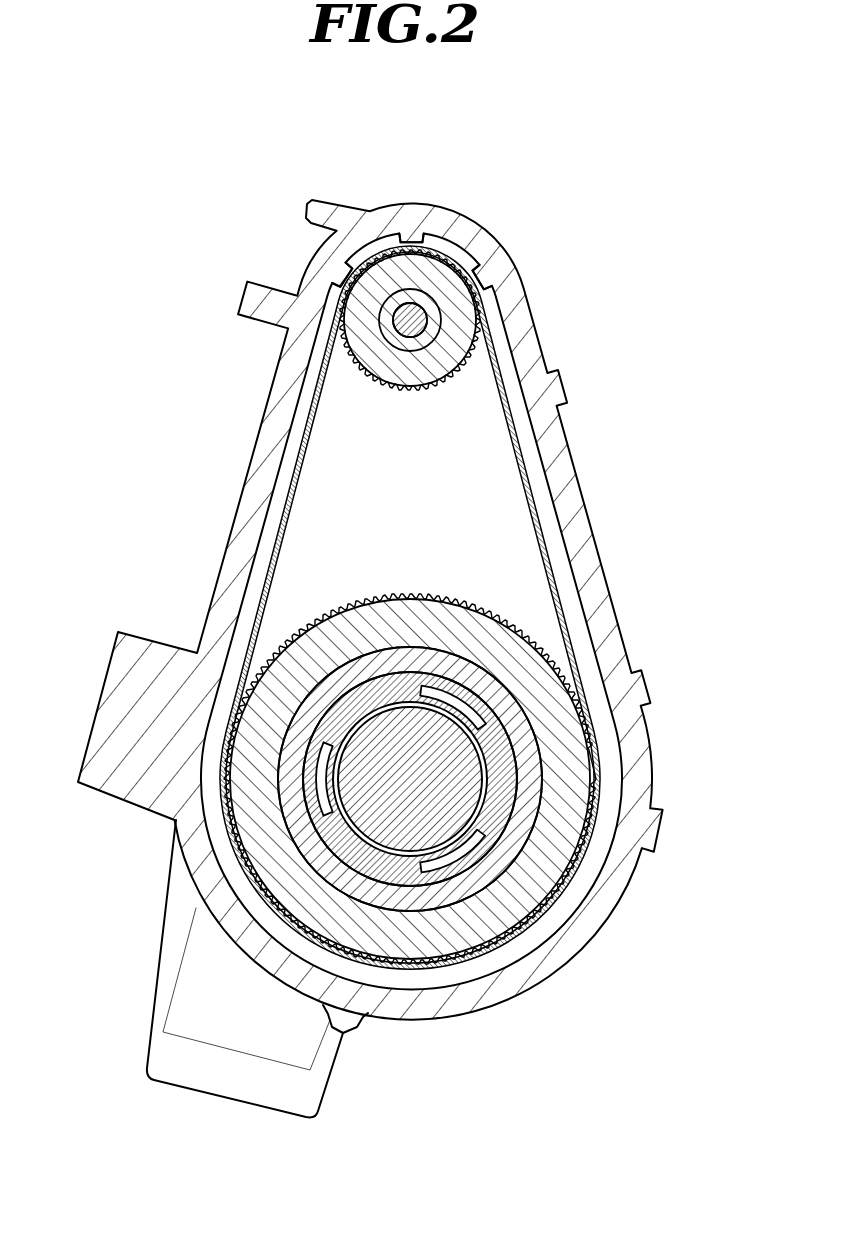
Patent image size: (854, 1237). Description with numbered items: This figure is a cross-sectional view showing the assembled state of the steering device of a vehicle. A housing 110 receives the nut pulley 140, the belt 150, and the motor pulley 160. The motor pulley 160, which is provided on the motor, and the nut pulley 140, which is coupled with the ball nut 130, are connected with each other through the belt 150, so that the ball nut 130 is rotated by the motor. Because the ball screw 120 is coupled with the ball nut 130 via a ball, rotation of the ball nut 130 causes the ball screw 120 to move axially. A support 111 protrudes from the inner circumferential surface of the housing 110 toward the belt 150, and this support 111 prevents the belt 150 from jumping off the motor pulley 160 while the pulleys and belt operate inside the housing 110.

The housing 110 is at (270, 456).
The support 111 is at (485, 275).
The ball screw 120 is at (413, 768).
The ball nut 130 is at (410, 903).
The nut pulley 140 is at (249, 815).
The belt 150 is at (533, 503).
The motor pulley 160 is at (446, 328).